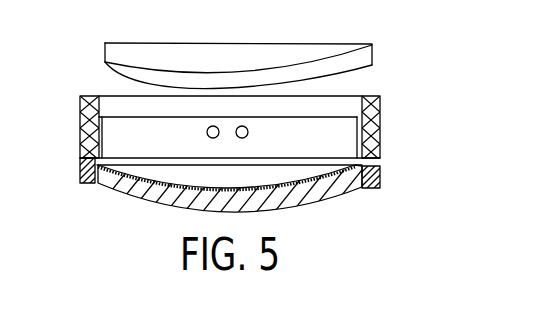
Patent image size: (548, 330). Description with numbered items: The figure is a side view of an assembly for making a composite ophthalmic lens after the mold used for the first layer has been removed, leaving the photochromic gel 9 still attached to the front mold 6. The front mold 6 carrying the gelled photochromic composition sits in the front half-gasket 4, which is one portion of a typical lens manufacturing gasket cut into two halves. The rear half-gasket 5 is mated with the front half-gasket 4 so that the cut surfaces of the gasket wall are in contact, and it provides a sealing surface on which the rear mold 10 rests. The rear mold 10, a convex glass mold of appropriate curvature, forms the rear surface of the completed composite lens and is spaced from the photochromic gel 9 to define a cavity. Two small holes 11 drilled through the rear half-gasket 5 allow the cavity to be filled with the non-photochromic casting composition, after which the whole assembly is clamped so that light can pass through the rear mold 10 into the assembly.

The rear mold 10 is at (400, 36).
The holes 11 is at (266, 125).
The rear half-gasket 5 is at (377, 128).
The front half-gasket 4 is at (380, 175).
The front mold 6 is at (331, 197).
The photochromic gel 9 is at (158, 172).